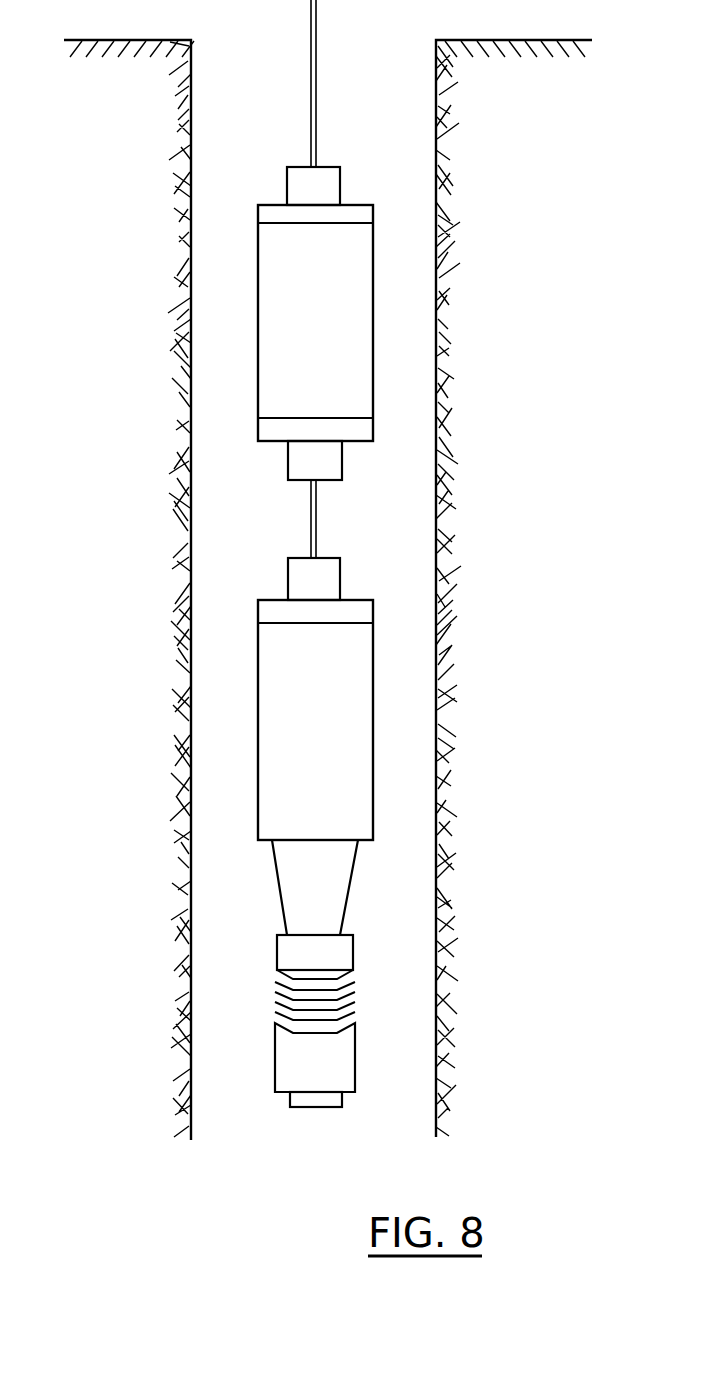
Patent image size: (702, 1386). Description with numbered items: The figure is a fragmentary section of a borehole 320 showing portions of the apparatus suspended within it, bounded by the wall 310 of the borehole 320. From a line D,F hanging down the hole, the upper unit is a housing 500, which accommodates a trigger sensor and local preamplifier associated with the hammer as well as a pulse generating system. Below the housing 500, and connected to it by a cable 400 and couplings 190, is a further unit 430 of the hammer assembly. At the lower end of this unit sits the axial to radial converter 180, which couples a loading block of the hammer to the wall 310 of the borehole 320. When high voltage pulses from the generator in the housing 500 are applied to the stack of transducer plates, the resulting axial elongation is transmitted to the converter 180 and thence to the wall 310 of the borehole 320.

The cable / data and power line D,F is at (317, 65).
The couplings 190 is at (340, 185).
The housing 500 is at (355, 296).
The borehole 320 is at (410, 338).
The wall of the borehole 310 is at (450, 410).
The cable 400 is at (318, 528).
The downhole tool module 430 is at (362, 762).
The axial to radial converter 180 is at (340, 951).